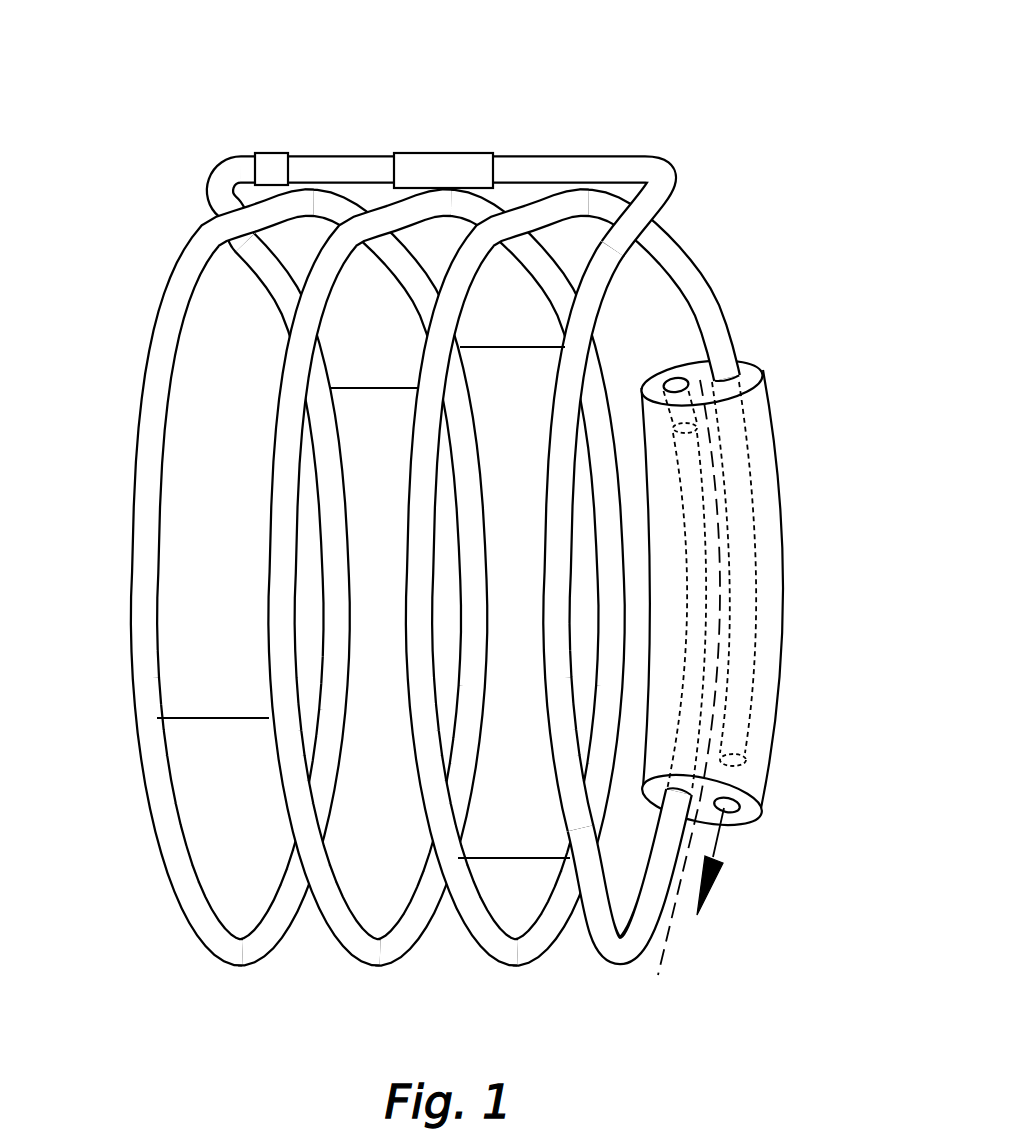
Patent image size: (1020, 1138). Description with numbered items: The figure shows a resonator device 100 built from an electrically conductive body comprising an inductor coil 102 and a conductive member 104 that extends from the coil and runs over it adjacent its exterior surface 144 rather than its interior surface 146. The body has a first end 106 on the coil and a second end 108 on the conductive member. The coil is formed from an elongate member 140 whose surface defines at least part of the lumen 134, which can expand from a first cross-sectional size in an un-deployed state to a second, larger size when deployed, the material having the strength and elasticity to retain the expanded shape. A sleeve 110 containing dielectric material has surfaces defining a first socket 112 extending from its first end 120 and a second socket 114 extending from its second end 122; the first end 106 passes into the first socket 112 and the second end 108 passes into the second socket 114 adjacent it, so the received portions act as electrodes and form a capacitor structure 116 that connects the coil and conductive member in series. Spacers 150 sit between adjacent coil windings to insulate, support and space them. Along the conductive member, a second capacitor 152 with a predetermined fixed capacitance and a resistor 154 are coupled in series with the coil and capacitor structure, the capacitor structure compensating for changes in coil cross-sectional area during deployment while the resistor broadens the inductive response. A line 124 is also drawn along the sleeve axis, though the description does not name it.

The resonator device 100 is at (461, 528).
The inductor coil 102 is at (394, 622).
The conductive member 104 is at (394, 578).
The first end 106 is at (750, 746).
The second end 108 is at (673, 427).
The sleeve 110 is at (759, 642).
The first socket 112 is at (738, 828).
The second socket 114 is at (676, 370).
The capacitor structure 116 is at (818, 656).
The first end of the sleeve 120 is at (752, 360).
The second end of the sleeve 122 is at (750, 812).
The central axis 124 is at (664, 954).
The lumen 134 is at (371, 577).
The elongate member 140 is at (201, 577).
The exterior surface 144 is at (236, 577).
The interior surface 146 is at (308, 215).
The spacers 150 is at (215, 750).
The second capacitor 152 is at (272, 153).
The resistor 154 is at (448, 153).